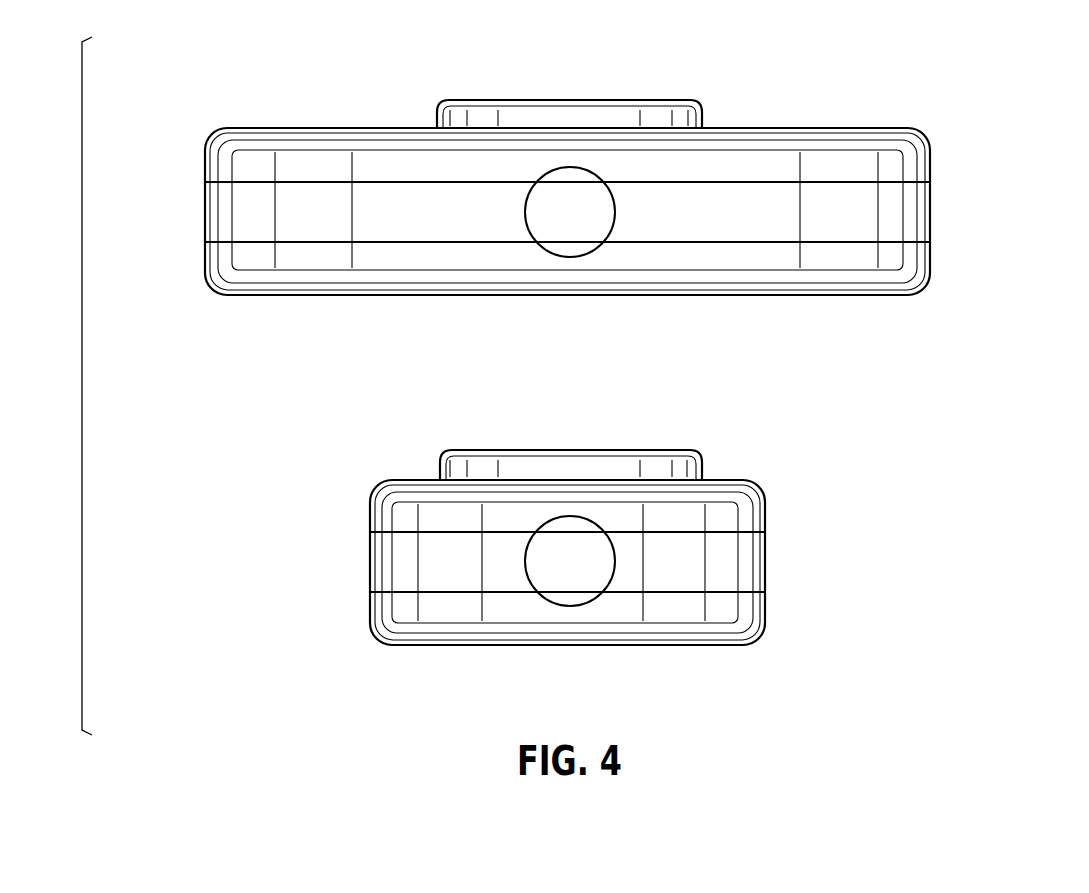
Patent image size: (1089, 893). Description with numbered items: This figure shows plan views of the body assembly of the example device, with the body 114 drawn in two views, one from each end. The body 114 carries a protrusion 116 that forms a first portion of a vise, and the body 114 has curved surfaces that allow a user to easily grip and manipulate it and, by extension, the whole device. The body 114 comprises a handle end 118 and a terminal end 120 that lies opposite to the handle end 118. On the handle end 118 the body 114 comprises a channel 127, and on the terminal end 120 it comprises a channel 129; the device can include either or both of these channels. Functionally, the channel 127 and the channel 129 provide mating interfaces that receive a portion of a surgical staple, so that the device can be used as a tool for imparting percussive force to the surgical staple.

The body 114 is at (825, 138).
The protrusion 116 is at (653, 113).
The handle end 118 is at (284, 124).
The terminal end 120 is at (399, 466).
The channel 127 is at (912, 215).
The channel 129 is at (743, 565).